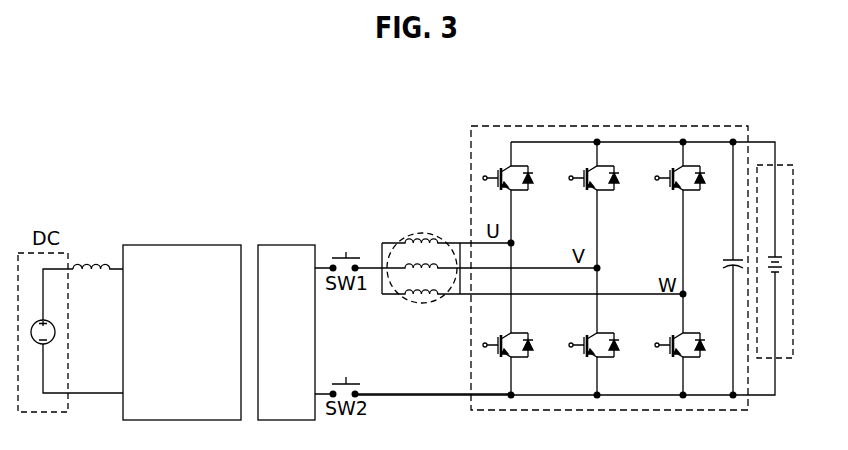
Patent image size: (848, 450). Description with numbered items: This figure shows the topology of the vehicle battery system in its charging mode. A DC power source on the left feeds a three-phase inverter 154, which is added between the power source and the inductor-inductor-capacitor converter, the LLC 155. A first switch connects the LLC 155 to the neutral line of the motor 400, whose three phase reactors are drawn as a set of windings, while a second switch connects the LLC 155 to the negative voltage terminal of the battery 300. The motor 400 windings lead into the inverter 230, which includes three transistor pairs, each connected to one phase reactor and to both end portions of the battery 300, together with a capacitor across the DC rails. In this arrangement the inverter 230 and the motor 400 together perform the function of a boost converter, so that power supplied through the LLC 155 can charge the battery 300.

The 3-phase inverter 154 is at (167, 244).
The inductor-inductor-capacitor (LLC) 155 is at (275, 244).
The motor 400 is at (422, 231).
The inverter 230 is at (707, 125).
The battery 300 is at (780, 164).